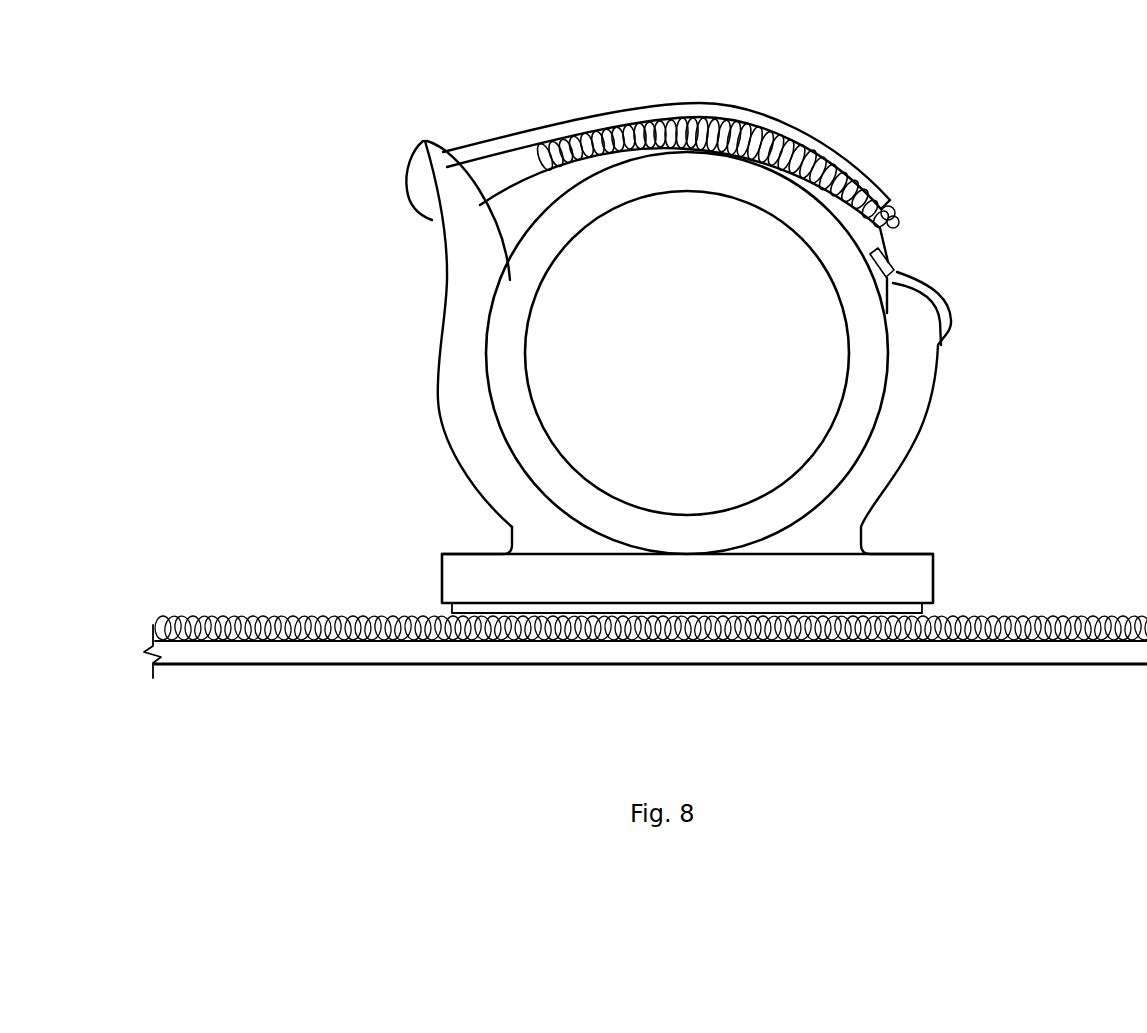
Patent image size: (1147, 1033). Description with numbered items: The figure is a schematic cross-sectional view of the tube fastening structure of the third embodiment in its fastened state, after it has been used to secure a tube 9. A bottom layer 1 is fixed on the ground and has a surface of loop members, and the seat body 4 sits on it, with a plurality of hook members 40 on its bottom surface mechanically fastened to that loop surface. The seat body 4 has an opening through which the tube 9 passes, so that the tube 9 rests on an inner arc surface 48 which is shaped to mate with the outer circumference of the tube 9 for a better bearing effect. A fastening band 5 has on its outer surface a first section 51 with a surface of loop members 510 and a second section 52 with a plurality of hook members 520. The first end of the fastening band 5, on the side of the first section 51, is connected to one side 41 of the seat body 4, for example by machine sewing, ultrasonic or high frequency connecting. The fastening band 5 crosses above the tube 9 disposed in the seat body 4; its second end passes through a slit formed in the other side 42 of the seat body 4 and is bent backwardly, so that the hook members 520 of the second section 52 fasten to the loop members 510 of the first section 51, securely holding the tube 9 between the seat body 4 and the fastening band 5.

The bottom layer 1 is at (645, 644).
The seat body 4 is at (678, 377).
The fastening band 5 is at (717, 164).
The tube 9 is at (527, 443).
The hook members 40 is at (617, 642).
The side of the seat body 41 is at (903, 402).
The other side of the seat body 42 is at (462, 308).
The inner arc surface 48 is at (485, 348).
The first section 51 is at (692, 148).
The second section 52 is at (764, 124).
The loop members 510 is at (892, 222).
The hook members 520 is at (622, 143).